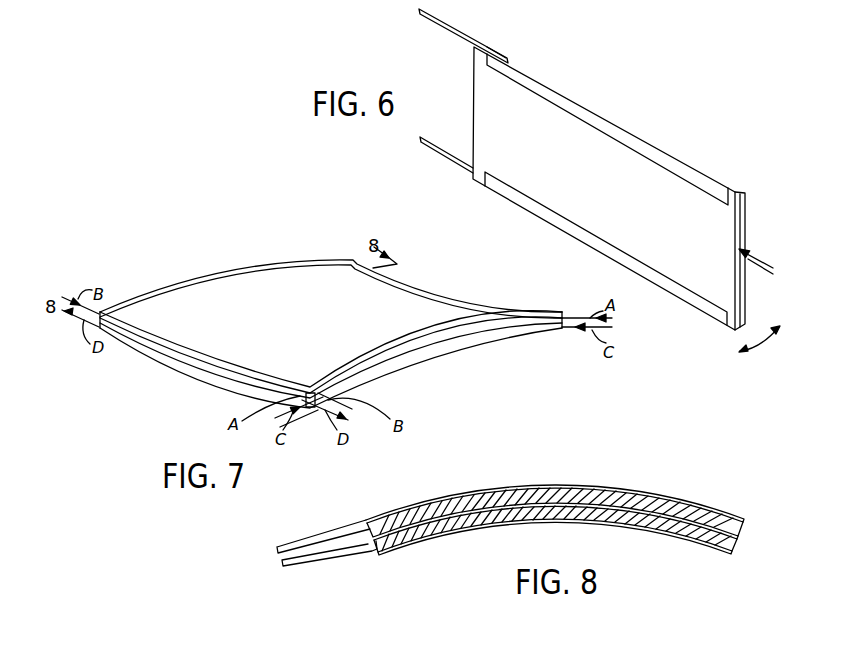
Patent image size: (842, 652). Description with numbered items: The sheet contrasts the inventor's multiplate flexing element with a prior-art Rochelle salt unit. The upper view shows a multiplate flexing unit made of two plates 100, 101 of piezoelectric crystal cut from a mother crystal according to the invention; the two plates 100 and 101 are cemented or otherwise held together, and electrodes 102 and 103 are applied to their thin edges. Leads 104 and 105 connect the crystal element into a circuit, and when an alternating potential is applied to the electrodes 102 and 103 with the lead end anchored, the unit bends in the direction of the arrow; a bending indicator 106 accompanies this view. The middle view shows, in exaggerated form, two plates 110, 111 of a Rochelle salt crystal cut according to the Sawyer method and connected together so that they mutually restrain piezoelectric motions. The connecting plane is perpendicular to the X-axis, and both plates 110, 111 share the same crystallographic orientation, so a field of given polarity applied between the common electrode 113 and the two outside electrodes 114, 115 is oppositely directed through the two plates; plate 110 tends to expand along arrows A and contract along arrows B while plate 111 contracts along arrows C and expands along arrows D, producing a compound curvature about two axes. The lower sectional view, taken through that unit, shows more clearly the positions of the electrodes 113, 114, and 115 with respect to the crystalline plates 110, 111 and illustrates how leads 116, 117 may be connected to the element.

In FIG. 6, the plate 100 is at (742, 214).
In FIG. 6, the plate 101 is at (745, 307).
In FIG. 6, the electrode 102 is at (562, 86).
In FIG. 6, the electrode 103 is at (515, 201).
In FIG. 6, the lead 104 is at (443, 27).
In FIG. 6, the lead 105 is at (442, 153).
In FIG. 6, the center electrode / shim 106 is at (742, 238).
In FIG. 7, the plate 110 is at (510, 318).
In FIG. 8, the plate 110 is at (697, 505).
In FIG. 7, the plate 111 is at (510, 332).
In FIG. 8, the plate 111 is at (648, 527).
In FIG. 8, the common electrode 113 is at (702, 527).
In FIG. 8, the outside electrode 114 is at (418, 503).
In FIG. 8, the outside electrode 115 is at (427, 537).
In FIG. 8, the lead 116 is at (320, 535).
In FIG. 8, the lead 117 is at (327, 553).